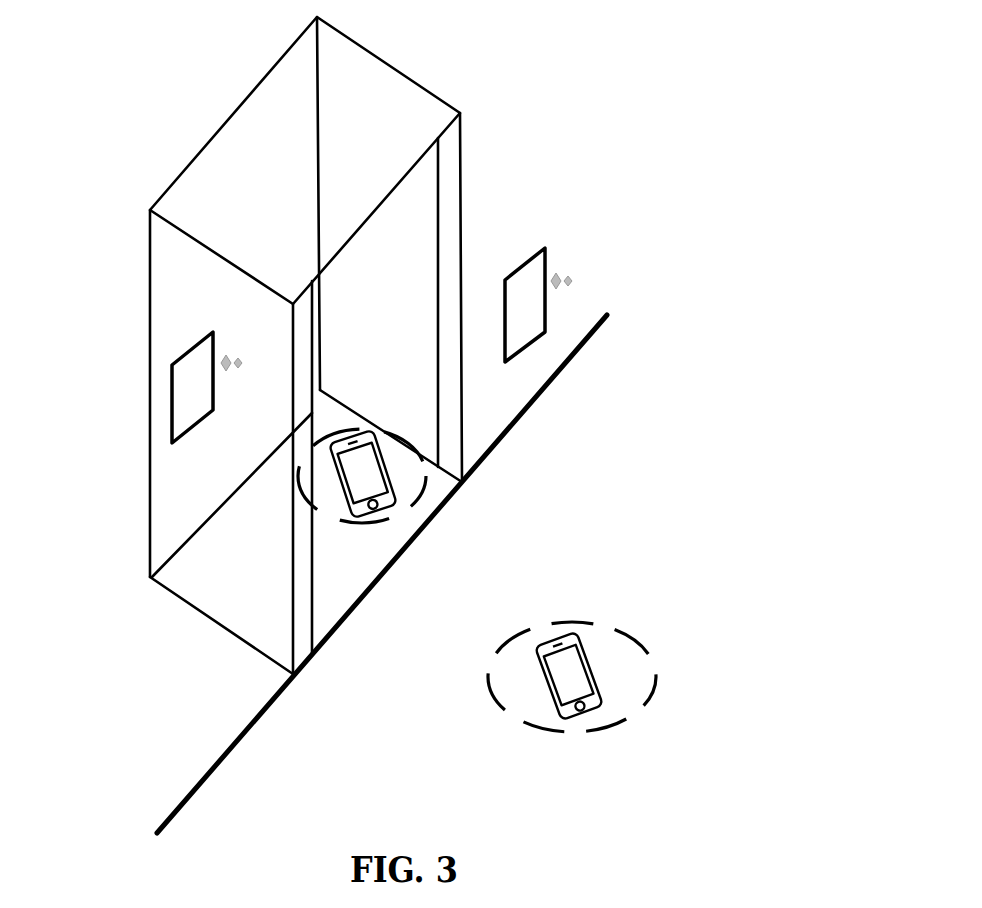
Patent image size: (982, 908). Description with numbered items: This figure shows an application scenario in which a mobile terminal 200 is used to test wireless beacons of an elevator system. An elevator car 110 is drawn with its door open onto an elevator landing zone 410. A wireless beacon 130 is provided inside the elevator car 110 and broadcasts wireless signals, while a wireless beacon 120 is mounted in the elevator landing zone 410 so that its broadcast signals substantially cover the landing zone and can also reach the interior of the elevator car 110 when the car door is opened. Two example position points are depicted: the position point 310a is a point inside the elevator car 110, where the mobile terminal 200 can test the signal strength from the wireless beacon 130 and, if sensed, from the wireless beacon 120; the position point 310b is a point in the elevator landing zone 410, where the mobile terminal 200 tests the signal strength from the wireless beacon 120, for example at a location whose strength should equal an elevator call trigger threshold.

The elevator car 110 is at (410, 80).
The wireless beacon 120 is at (530, 340).
The wireless beacon 130 is at (170, 375).
The mobile terminal 200 is at (358, 455).
The position point 310a is at (347, 538).
The position point 310b is at (557, 746).
The elevator landing zone 410 is at (714, 322).